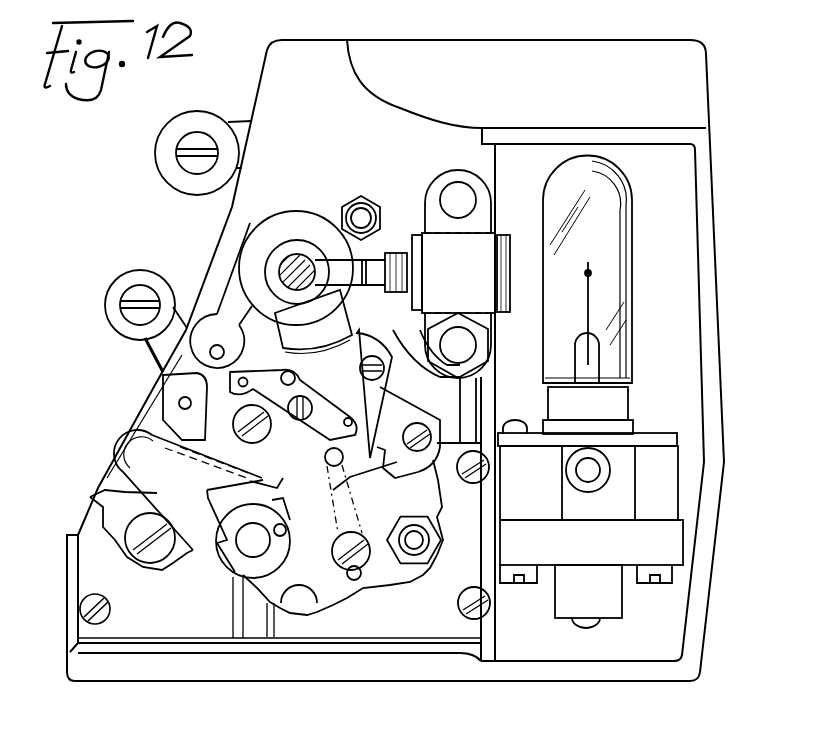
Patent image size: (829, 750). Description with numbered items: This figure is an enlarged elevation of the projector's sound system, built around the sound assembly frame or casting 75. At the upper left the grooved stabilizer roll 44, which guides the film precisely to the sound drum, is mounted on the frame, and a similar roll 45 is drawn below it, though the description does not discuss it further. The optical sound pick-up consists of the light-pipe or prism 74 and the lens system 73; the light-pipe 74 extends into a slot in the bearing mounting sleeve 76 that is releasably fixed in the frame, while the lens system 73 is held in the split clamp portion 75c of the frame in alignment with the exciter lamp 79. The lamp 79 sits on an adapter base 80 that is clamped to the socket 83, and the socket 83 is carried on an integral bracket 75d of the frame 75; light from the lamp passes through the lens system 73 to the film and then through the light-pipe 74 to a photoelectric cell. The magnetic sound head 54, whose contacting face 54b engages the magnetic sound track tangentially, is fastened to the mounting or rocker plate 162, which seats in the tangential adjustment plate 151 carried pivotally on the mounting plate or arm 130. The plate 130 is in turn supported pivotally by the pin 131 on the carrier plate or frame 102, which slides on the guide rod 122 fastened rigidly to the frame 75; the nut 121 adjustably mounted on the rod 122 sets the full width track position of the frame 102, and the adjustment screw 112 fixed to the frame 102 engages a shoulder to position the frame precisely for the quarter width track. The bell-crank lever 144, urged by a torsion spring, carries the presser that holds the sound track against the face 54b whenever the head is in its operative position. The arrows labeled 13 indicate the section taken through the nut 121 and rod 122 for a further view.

The grooved stabilizer roll 44 is at (203, 121).
The screw boss 45 is at (133, 283).
The light-pipe or prism 74 is at (331, 258).
The bearing mounting sleeve 76 is at (265, 243).
The lens system 73 is at (413, 236).
The sound assembly frame or casting 75 is at (535, 152).
The split clamp portion 75c is at (478, 281).
The exciter lamp 79 is at (625, 229).
The adapter base 80 is at (658, 432).
The socket 83 is at (668, 471).
The integral bracket 75d is at (668, 545).
The mounting or rocker plate 162 is at (260, 363).
The magnetic sound head 54 is at (325, 334).
The contacting surface of the sound head 54b is at (303, 350).
The tangential adjustment plate 151 is at (320, 433).
The pin 131 is at (181, 402).
The bell-crank lever 144 is at (110, 488).
The carrier plate or frame 102 is at (163, 418).
The adjustment screw 112 is at (295, 601).
The mounting plate or arm 130 is at (337, 514).
The guide rod 122 is at (423, 537).
The nut 121 is at (411, 560).
The section line 13- 13 is at (413, 510).